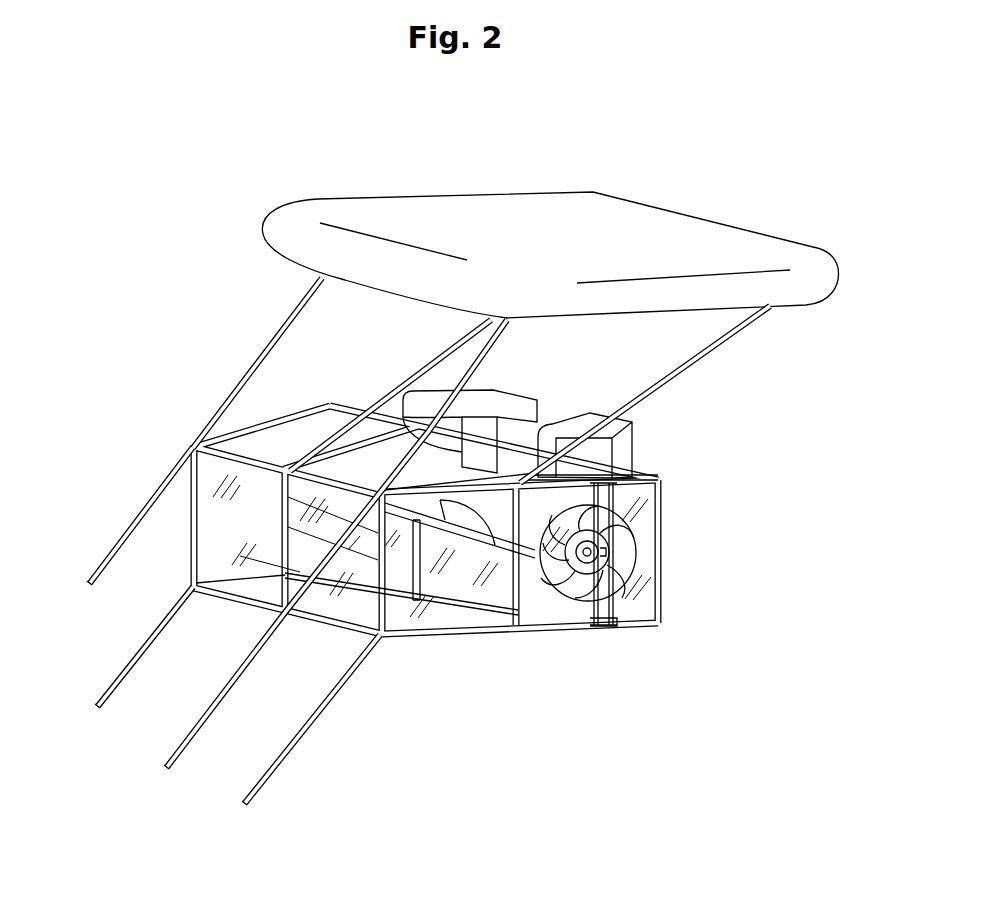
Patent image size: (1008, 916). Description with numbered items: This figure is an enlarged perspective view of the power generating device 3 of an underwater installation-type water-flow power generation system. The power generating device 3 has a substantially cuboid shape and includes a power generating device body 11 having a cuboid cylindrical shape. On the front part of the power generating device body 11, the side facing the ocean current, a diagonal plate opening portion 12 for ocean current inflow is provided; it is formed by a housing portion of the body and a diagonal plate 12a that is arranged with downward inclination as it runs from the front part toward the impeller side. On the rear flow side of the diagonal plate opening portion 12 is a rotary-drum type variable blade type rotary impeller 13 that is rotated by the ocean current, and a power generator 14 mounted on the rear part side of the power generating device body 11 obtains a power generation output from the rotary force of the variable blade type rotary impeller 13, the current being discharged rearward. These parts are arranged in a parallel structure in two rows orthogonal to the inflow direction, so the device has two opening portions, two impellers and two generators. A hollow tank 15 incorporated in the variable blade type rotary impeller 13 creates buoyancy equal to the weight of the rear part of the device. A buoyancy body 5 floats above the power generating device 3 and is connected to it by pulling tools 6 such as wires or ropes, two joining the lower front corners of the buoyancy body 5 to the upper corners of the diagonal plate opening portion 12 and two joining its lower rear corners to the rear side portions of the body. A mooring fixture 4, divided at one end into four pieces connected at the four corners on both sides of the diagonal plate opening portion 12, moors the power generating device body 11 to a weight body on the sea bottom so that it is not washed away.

The power generating device 3 is at (505, 655).
The mooring fixture 4 is at (142, 509).
The buoyancy body 5 is at (262, 229).
The pulling tool 6 is at (272, 340).
The power generating device body 11 is at (667, 567).
The diagonal plate opening portion 12 is at (212, 545).
The diagonal plate 12a is at (268, 473).
The variable blade type rotary impeller 13 is at (400, 566).
The power generator 14 is at (523, 392).
The hollow tank 15 is at (577, 633).